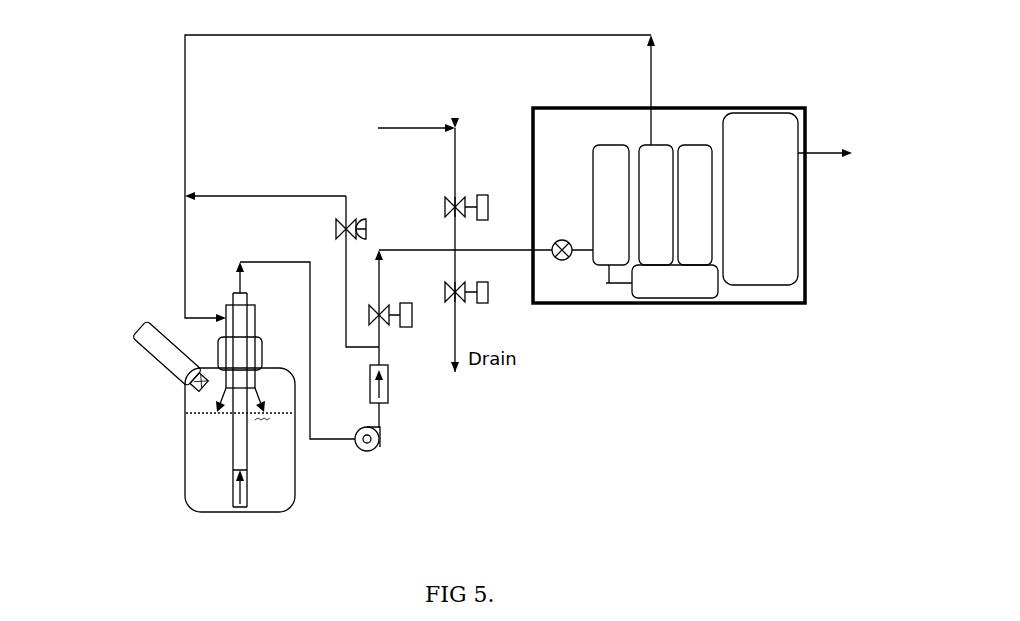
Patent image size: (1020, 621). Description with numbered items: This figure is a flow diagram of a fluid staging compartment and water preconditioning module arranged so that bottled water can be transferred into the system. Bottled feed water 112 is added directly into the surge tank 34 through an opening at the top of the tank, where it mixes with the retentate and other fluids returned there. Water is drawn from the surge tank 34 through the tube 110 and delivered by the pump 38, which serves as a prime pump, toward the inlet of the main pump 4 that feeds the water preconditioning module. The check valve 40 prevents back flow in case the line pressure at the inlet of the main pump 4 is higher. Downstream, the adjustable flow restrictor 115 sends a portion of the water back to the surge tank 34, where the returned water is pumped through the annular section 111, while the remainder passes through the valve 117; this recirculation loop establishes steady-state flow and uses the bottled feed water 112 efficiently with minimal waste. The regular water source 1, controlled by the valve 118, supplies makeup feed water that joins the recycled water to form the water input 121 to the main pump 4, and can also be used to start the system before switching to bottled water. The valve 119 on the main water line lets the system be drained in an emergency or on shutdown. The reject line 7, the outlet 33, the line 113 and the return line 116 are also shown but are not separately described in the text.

The regular water source 1 is at (420, 127).
The main pump 4 is at (718, 292).
The RO reject line 7 is at (653, 70).
The SWFI outlet 33 is at (825, 153).
The surge tank 34 is at (282, 508).
The pump 38 is at (382, 445).
The check valve 40 is at (388, 385).
The tube 110 is at (230, 455).
The annular section 111 is at (226, 326).
The bottled feed water 112 is at (155, 360).
The feed line 113 is at (290, 260).
The adjustable flow restrictor 115 is at (352, 220).
The return line 116 is at (283, 195).
The valve 117 is at (407, 328).
The valve 118 is at (477, 207).
The valve 119 is at (503, 250).
The water input 121 is at (488, 298).